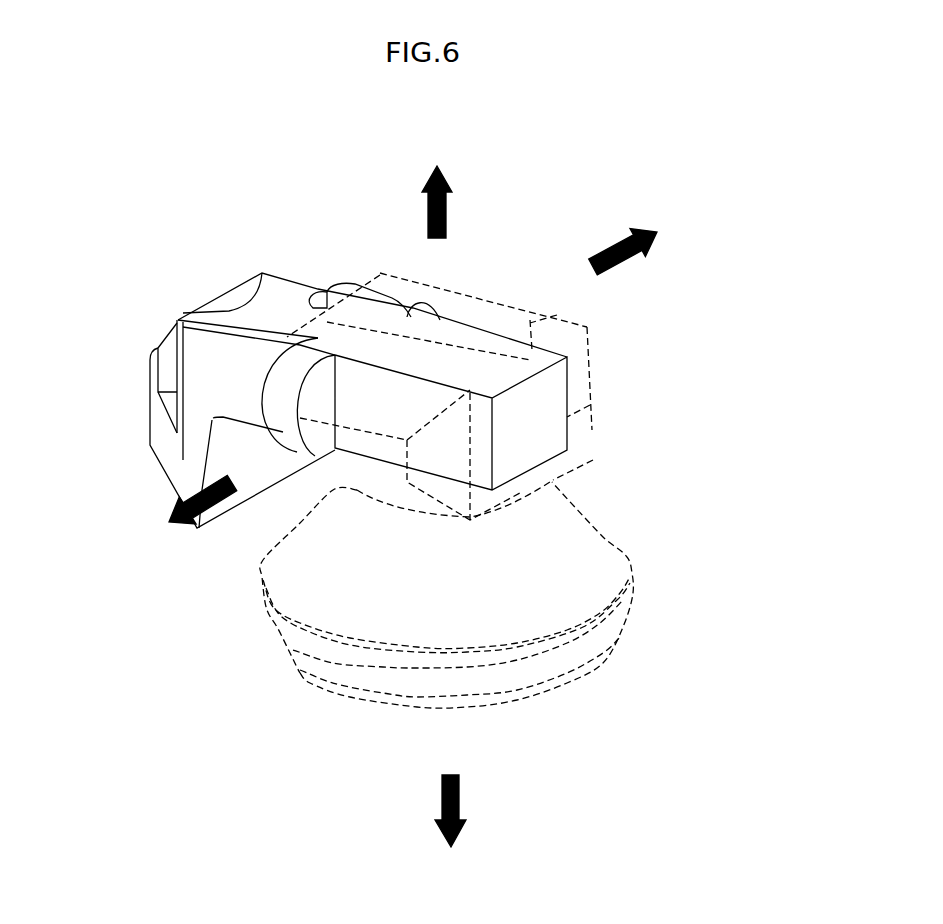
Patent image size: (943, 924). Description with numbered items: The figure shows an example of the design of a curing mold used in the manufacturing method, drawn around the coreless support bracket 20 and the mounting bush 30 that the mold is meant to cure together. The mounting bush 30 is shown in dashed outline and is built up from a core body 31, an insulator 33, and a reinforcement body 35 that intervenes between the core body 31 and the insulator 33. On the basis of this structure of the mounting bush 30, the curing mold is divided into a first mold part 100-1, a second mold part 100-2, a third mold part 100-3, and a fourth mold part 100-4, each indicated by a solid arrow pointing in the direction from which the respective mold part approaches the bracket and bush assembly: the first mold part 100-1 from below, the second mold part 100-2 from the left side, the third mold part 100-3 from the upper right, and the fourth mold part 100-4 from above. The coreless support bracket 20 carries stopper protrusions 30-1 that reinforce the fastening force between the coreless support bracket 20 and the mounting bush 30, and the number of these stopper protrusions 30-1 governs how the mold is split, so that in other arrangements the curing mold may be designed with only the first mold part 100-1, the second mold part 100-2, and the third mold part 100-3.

The coreless support bracket 20 is at (217, 397).
The mounting bush 30 is at (748, 452).
The stopper protrusion 30-1 is at (587, 325).
The core body 31 is at (593, 430).
The reinforcement body 35 is at (548, 537).
The insulator 33 is at (585, 653).
The first mold part 100-1 is at (464, 827).
The second mold part 100-2 is at (138, 517).
The third mold part 100-3 is at (702, 243).
The fourth mold part 100-4 is at (446, 186).